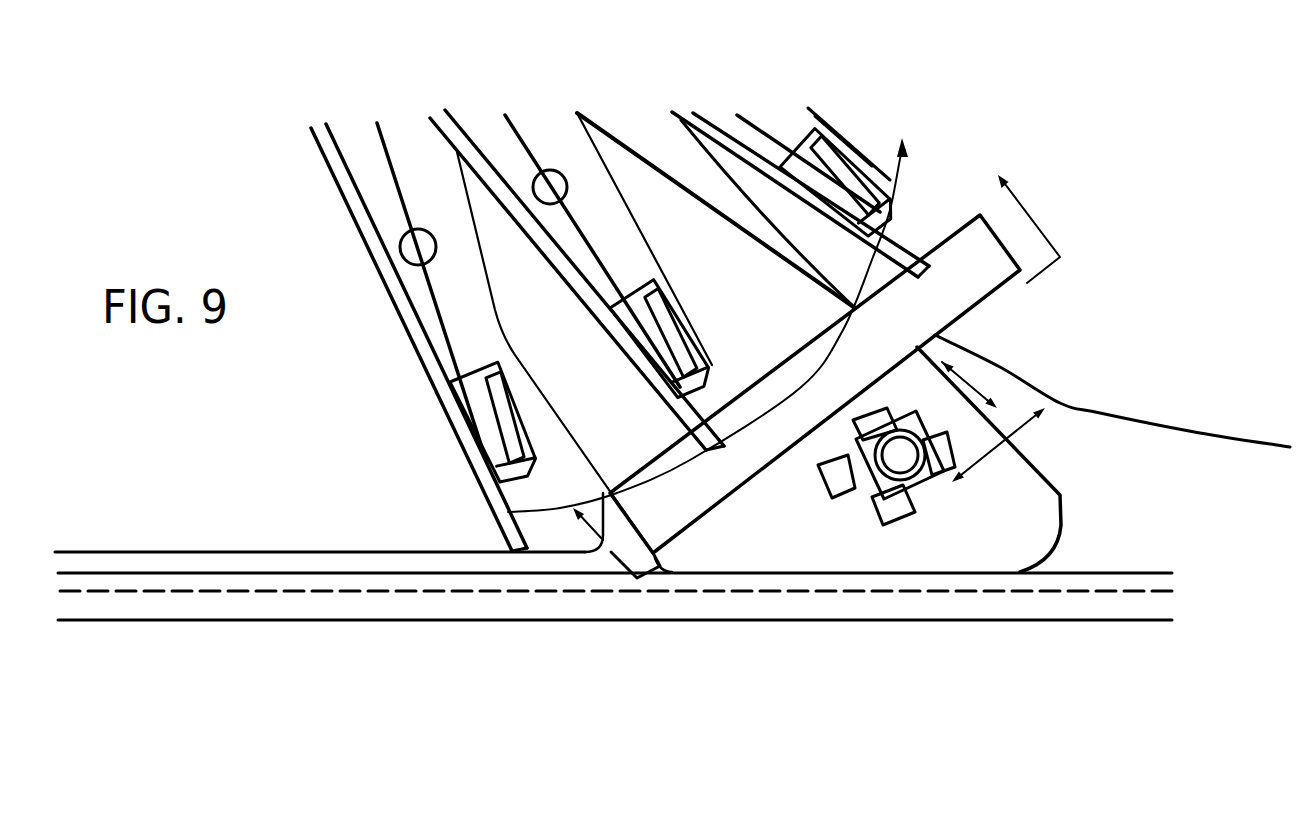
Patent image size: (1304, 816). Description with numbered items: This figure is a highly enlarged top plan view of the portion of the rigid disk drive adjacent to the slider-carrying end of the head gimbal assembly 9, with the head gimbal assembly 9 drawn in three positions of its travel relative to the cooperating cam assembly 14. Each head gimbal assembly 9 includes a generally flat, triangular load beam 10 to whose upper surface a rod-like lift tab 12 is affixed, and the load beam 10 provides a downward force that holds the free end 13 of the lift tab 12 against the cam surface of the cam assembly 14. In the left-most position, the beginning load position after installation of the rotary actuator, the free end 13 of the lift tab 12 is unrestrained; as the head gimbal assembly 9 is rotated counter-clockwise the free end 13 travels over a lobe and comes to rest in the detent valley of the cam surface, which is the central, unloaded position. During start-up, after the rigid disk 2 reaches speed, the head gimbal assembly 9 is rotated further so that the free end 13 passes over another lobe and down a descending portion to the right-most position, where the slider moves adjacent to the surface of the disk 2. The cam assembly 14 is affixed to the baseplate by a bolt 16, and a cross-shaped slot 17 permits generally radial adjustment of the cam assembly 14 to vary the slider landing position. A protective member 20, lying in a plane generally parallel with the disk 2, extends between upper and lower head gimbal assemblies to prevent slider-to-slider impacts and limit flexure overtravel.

The rigid disk 2 is at (1171, 236).
The head gimbal assembly 9 is at (620, 330).
The load beam 10 is at (784, 340).
The lift tab 12 is at (447, 393).
The free end 13 is at (497, 512).
The cam assembly 14 is at (1068, 486).
The bolt 16 is at (862, 473).
The cross-shaped slot 17 is at (897, 503).
The protective member 20 is at (763, 331).